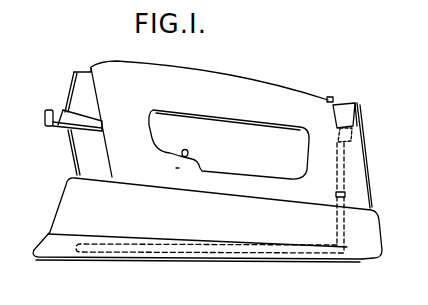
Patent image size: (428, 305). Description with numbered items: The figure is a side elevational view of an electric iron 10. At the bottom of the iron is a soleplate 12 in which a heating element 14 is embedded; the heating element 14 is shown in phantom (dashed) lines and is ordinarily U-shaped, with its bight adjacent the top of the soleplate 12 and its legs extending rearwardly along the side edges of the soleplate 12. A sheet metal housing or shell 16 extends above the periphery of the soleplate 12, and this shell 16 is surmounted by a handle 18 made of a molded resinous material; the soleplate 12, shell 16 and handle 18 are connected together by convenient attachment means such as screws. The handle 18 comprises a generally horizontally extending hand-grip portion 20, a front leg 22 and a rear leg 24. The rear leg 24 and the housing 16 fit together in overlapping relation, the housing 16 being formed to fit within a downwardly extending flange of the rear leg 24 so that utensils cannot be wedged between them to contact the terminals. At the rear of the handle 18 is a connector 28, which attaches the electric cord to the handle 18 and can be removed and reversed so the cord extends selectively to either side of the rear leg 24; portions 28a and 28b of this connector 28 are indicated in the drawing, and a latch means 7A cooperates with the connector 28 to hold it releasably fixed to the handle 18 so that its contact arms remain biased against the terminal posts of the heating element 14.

The electric iron 10 is at (298, 84).
The soleplate 12 is at (67, 250).
The heating element 14 is at (268, 256).
The sheet metal housing or shell 16 is at (63, 199).
The handle 18 is at (251, 82).
The hand-grip portion 20 is at (270, 117).
The front leg 22 is at (115, 117).
The rear leg 24 is at (357, 161).
The connector 28 is at (384, 92).
The lower portion of control block 28a is at (354, 140).
The side face of control block 28b is at (357, 118).
The indicator tab 7A is at (334, 97).